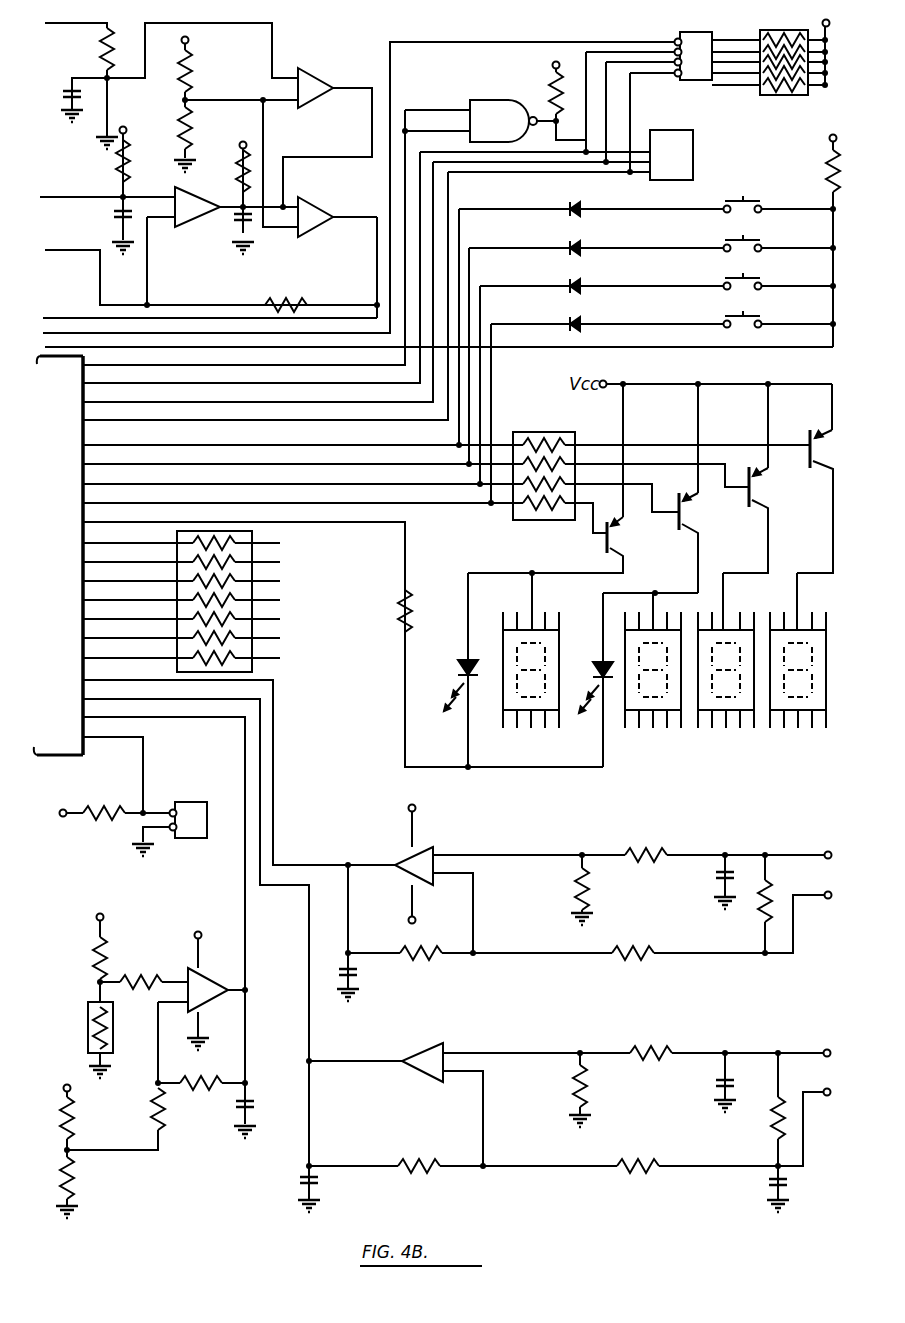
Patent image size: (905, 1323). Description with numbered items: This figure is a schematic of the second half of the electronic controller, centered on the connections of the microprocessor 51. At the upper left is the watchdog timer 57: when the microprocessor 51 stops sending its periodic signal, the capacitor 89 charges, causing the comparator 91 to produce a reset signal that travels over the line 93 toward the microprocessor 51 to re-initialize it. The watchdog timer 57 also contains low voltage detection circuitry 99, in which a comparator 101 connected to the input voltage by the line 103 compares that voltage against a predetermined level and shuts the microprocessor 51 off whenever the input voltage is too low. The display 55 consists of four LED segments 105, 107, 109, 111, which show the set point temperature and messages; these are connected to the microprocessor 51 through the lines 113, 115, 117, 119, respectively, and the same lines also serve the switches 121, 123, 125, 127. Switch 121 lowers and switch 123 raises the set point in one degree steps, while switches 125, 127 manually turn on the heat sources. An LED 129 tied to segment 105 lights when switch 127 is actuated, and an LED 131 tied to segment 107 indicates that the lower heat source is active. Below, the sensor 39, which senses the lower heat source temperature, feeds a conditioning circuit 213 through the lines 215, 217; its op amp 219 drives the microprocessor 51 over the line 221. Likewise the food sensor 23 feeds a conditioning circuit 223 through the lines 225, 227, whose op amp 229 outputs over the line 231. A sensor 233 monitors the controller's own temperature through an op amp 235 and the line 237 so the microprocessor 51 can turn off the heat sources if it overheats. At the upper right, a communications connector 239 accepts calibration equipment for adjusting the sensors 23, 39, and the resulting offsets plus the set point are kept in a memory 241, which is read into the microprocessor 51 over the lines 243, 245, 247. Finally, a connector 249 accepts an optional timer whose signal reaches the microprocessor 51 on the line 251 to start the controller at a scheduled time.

The microprocessor 51 is at (62, 562).
The display 55 is at (691, 748).
The watchdog timer 57 is at (66, 178).
The capacitor 89 is at (108, 216).
The comparator 91 is at (320, 200).
The line 93 is at (338, 222).
The low voltage detection circuitry 99 is at (292, 46).
The comparator 101 is at (310, 103).
The line 103 is at (66, 25).
The LED segment 105 is at (505, 730).
The LED segment 107 is at (630, 732).
The LED segment 109 is at (728, 732).
The LED segment 111 is at (803, 732).
The line 113 is at (530, 572).
The line 115 is at (447, 487).
The line 117 is at (304, 462).
The line 119 is at (400, 449).
The switch 121 is at (753, 194).
The switch 123 is at (763, 229).
The switch 125 is at (763, 268).
The switch 127 is at (763, 306).
The LED 129 is at (460, 660).
The LED 131 is at (580, 667).
The conditioning circuit 213 is at (524, 832).
The line 215 is at (793, 852).
The line 217 is at (797, 935).
The op amp 219 is at (423, 845).
The line 221 is at (312, 862).
The conditioning circuit 223 is at (535, 1186).
The line 225 is at (810, 1031).
The line 227 is at (805, 1144).
The op amp 229 is at (435, 1027).
The line 231 is at (308, 995).
The sensor 233 is at (88, 1012).
The op amp 235 is at (212, 980).
The line 237 is at (244, 846).
The communications connector 239 is at (698, 81).
The memory 241 is at (695, 154).
The line 243 is at (467, 154).
The line 245 is at (505, 164).
The line 247 is at (592, 174).
The connector 249 is at (199, 801).
The line 251 is at (148, 743).
The sensor 39 is at (842, 879).
The sensor 23 is at (840, 1085).